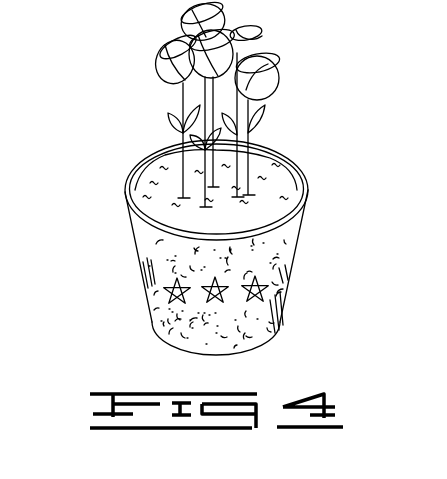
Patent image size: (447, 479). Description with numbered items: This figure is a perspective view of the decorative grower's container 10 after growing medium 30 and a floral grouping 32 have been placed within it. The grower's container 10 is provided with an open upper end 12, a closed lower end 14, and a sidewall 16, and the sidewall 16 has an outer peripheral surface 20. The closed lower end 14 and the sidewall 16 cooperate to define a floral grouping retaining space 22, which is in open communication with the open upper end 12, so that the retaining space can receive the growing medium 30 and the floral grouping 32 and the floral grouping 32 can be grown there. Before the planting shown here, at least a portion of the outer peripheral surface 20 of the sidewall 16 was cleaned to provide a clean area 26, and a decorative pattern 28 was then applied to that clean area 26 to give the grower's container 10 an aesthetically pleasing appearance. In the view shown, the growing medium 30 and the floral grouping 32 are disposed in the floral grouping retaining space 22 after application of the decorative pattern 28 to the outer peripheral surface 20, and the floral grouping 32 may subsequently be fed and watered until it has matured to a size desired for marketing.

The grower's container 10 is at (116, 151).
The open upper end 12 is at (172, 148).
The closed lower end 14 is at (270, 337).
The sidewall 16 is at (147, 241).
The outer peripheral surface 20 is at (285, 235).
The floral grouping retaining space 22 is at (262, 168).
The clean area 26 is at (163, 294).
The decorative pattern 28 is at (258, 293).
The growing medium 30 is at (160, 196).
The floral grouping 32 is at (253, 33).